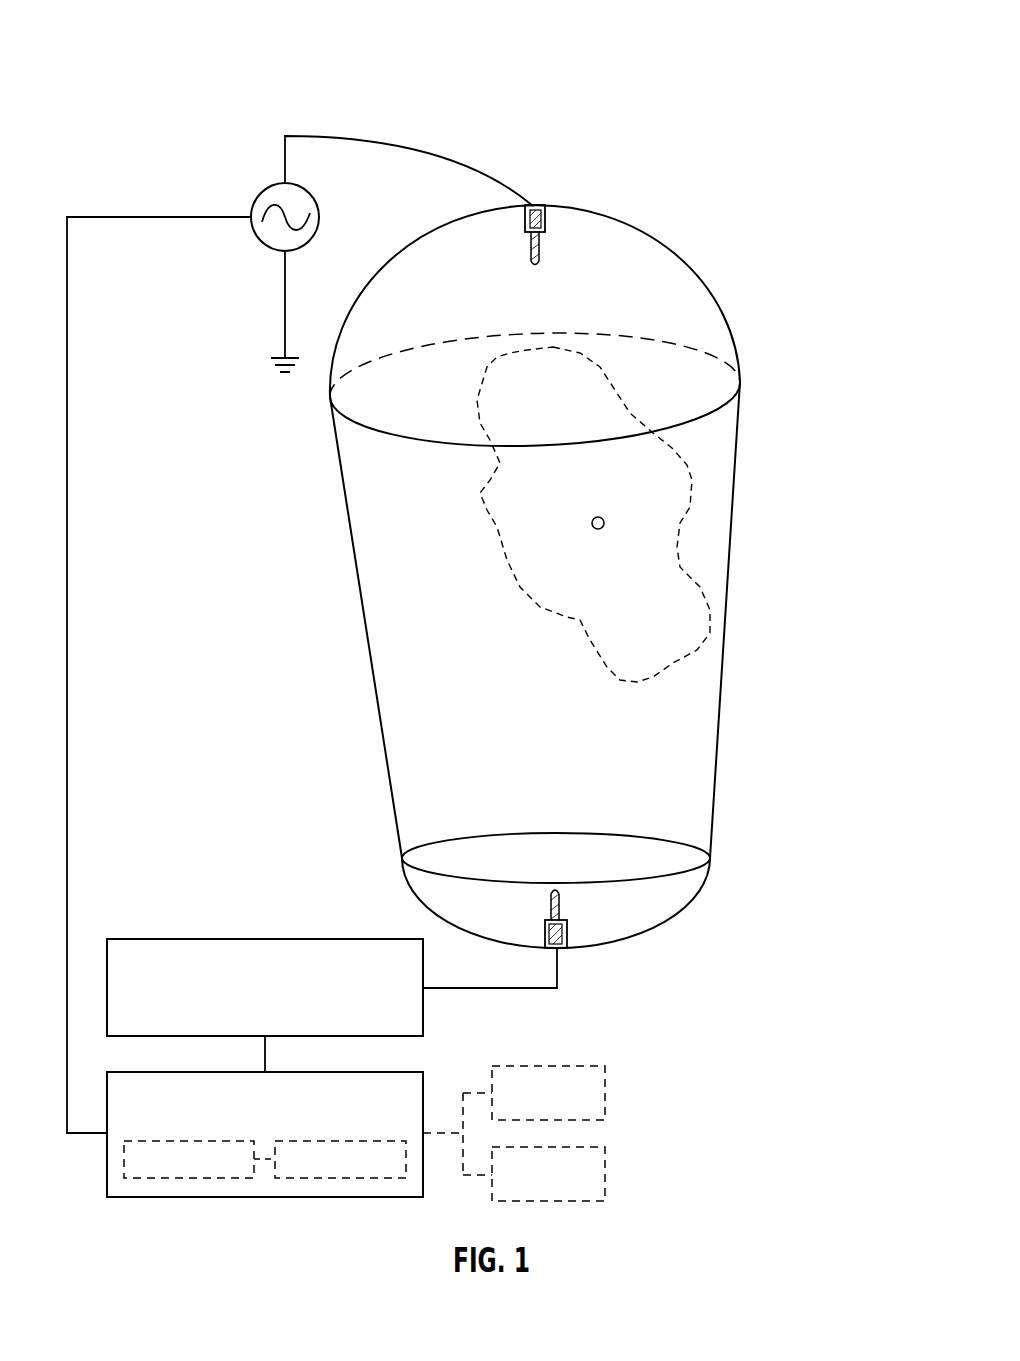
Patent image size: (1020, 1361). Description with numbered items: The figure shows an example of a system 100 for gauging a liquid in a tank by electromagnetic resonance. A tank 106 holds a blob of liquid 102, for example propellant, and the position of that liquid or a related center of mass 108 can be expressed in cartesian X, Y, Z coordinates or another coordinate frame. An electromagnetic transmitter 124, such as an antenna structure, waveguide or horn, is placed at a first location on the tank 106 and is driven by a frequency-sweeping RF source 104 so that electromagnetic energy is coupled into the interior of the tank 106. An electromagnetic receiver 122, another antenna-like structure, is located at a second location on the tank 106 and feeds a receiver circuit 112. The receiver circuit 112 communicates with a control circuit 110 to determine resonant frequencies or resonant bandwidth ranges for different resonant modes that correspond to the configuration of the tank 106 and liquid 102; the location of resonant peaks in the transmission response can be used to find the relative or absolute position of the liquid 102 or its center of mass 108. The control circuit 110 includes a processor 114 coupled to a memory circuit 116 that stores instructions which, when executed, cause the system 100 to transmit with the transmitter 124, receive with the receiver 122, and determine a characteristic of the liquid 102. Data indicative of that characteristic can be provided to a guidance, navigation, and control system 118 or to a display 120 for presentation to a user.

The system 100 is at (213, 78).
The liquid 102 is at (690, 470).
The frequency-sweeping RF source 104 is at (260, 192).
The tank 106 is at (680, 262).
The center of mass 108 is at (600, 516).
The control circuit 110 is at (357, 1072).
The receiver circuit 112 is at (356, 939).
The processor 114 is at (190, 1141).
The memory circuit 116 is at (340, 1141).
The guidance, navigation, and control (GNC) system 118 is at (607, 1097).
The display 120 is at (607, 1178).
The electromagnetic receiver 122 is at (562, 912).
The electromagnetic transmitter 124 is at (543, 247).